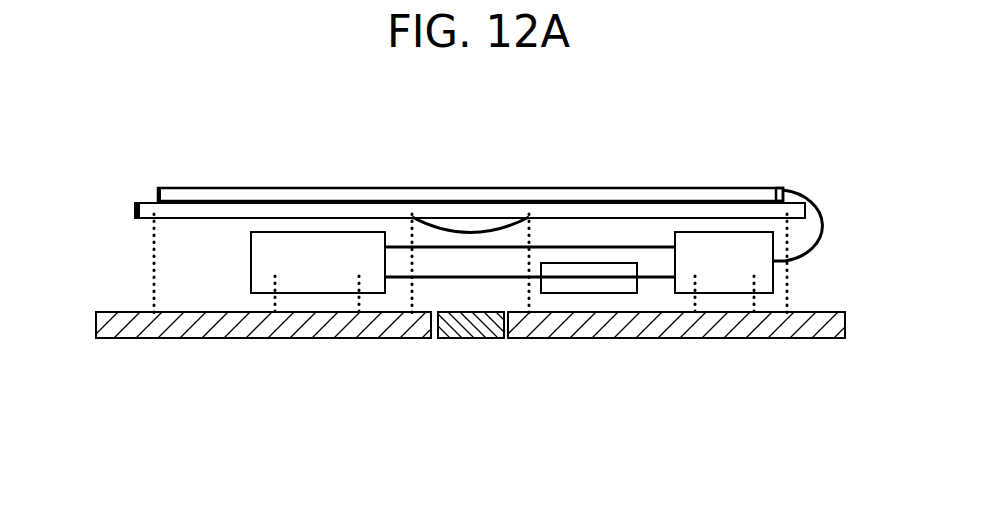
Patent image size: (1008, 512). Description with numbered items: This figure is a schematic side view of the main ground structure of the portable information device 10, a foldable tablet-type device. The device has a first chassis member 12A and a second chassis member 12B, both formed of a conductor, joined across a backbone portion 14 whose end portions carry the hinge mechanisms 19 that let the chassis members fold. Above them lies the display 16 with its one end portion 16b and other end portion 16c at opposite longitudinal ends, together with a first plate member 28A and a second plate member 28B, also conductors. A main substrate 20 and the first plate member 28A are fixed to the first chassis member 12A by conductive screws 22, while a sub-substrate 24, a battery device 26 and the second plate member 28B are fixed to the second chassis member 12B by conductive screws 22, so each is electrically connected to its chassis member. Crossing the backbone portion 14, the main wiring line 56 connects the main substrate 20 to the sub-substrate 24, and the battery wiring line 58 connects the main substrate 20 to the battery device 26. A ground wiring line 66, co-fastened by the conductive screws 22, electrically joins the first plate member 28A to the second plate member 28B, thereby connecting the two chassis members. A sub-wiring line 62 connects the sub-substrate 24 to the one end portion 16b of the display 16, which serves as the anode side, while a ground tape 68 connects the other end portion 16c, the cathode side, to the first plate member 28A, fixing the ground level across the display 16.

The portable information device 10 is at (81, 126).
The first chassis member 12A is at (175, 345).
The second chassis member 12B is at (823, 345).
The backbone portion 14 is at (474, 375).
The hinge mechanism 19 is at (478, 345).
The display 16 is at (308, 190).
The one end portion 16b is at (788, 189).
The other end portion 16c is at (153, 189).
The main substrate 20 is at (320, 276).
The conductive screw 22 is at (152, 289).
The sub-substrate 24 is at (722, 276).
The battery device 26 is at (596, 286).
The first plate member 28A is at (247, 205).
The second plate member 28B is at (600, 208).
The main wiring line 56 is at (530, 173).
The battery wiring line 58 is at (397, 278).
The sub-wiring line 62 is at (832, 227).
The ground wiring line 66 is at (466, 216).
The ground tape 68 is at (140, 203).